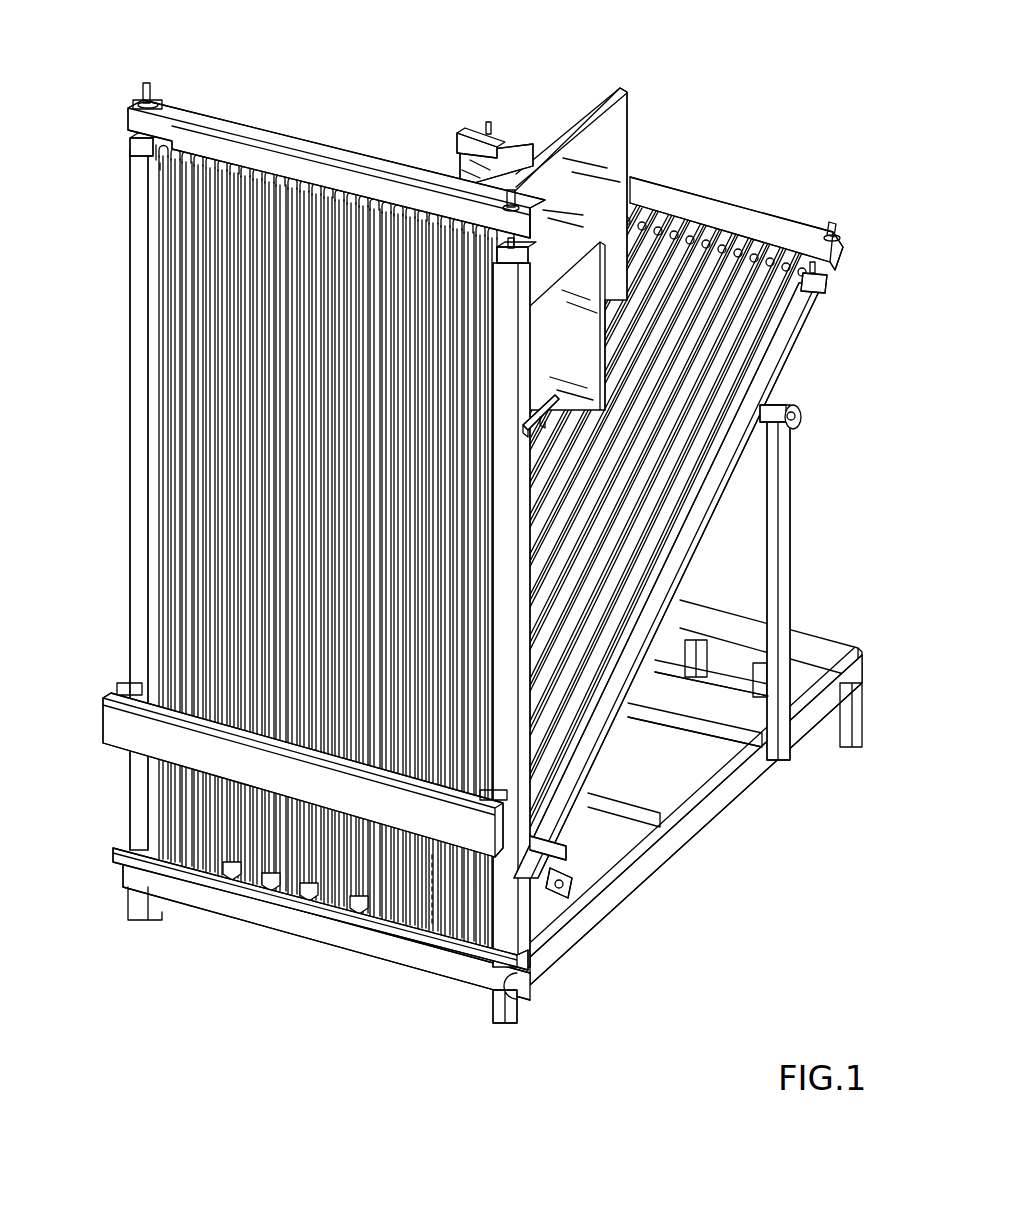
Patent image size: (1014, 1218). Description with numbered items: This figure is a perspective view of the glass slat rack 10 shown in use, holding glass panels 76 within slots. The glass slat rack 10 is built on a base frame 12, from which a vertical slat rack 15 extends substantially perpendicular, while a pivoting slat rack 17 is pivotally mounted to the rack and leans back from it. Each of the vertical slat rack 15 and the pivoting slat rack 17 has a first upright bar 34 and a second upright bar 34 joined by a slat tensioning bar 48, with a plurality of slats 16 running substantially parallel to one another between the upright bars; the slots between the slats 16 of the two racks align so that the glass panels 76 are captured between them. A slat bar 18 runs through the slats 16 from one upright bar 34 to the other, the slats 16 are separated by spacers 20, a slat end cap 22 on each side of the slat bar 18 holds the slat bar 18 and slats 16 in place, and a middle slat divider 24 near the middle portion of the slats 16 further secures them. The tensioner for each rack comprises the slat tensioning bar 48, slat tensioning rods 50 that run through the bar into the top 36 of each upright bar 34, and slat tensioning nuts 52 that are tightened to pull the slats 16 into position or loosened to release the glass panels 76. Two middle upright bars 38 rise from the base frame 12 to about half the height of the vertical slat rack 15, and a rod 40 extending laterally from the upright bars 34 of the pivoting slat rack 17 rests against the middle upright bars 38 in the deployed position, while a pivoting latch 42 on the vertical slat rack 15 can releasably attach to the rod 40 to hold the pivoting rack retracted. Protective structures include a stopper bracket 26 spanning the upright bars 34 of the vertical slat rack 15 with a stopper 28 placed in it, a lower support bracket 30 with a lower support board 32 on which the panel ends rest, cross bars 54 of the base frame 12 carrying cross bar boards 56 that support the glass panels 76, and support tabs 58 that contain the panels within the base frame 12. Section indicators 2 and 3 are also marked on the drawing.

The section line 2 is at (760, 582).
The section line 3 is at (145, 24).
The glass slat rack 10 is at (366, 86).
The base frame 12 is at (695, 808).
The vertical slat rack 15 is at (110, 452).
The slats 16 is at (767, 303).
The pivoting slat rack 17 is at (808, 172).
The slat bar 18 is at (497, 223).
The spacers 20 is at (210, 143).
The slat end cap 22 is at (158, 160).
The middle slat divider 24 is at (313, 183).
The stopper bracket 26 is at (115, 742).
The stopper 28 is at (535, 937).
The lower support bracket 30 is at (520, 985).
The lower support board 32 is at (470, 945).
The upright bar 34 is at (130, 300).
The top of upright bar 36 is at (130, 142).
The middle upright bar 38 is at (790, 520).
The rod 40 is at (797, 408).
The pivoting latch 42 is at (547, 397).
The slat tensioning bar 48 is at (345, 160).
The slat tensioning rod 50 is at (150, 90).
The slat tensioning nut 52 is at (160, 104).
The cross bars 54 is at (680, 735).
The cross bar boards 56 is at (700, 725).
The support tabs 58 is at (570, 885).
The glass panels 76 is at (622, 125).